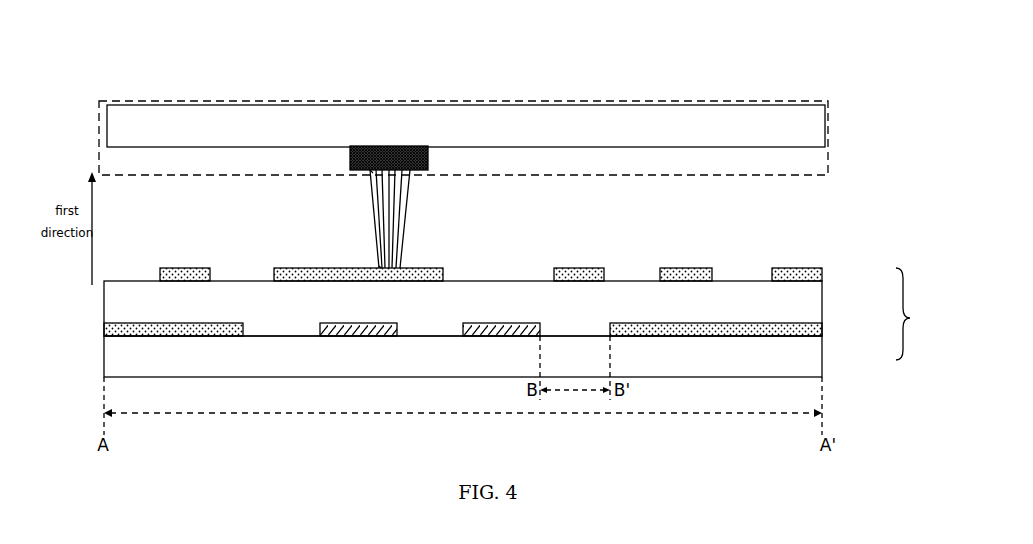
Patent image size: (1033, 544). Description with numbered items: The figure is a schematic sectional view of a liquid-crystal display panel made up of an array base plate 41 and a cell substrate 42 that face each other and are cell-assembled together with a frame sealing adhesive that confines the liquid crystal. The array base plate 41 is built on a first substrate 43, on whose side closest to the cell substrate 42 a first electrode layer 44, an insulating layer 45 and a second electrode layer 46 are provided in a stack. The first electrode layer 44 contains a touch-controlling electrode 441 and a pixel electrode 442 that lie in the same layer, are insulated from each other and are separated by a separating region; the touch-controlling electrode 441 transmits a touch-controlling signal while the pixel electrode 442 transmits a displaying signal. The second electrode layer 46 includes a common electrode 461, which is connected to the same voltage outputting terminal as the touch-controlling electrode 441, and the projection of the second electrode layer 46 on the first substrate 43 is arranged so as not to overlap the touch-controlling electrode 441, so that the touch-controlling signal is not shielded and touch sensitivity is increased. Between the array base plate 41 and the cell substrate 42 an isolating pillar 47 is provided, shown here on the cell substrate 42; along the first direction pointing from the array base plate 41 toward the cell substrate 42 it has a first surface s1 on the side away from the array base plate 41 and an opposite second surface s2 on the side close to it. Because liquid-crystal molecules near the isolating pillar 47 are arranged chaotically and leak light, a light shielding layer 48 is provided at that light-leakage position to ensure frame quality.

The array base plate 41 is at (915, 314).
The cell substrate 42 is at (828, 122).
The first substrate 43 is at (760, 358).
The first electrode layer 44 is at (760, 331).
The touch-controlling electrode 441 is at (499, 333).
The pixel electrode 442 is at (648, 333).
The insulating layer 45 is at (760, 302).
The second electrode layer 46 is at (775, 274).
The common electrode 461 is at (577, 280).
The isolating pillar 47 is at (389, 197).
The light shielding layer 48 is at (420, 162).
The first surface s1 is at (372, 172).
The second surface s2 is at (380, 267).